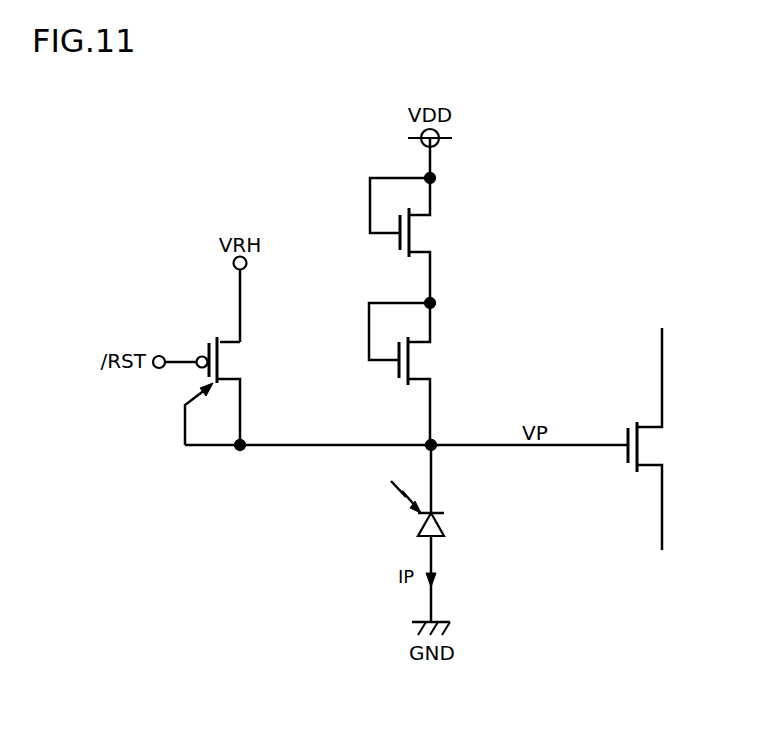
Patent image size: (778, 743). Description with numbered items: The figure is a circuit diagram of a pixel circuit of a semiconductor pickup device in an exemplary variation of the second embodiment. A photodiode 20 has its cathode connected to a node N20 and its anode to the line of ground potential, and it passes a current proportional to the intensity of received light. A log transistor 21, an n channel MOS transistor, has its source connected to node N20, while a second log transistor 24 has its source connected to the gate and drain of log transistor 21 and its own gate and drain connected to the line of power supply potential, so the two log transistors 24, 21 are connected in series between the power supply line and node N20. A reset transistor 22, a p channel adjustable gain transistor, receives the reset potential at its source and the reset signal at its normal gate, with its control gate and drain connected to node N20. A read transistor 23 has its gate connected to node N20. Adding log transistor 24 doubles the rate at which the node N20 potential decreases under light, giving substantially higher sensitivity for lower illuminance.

The photodiode 20 is at (446, 524).
The log transistor 21 is at (420, 382).
The reset transistor 22 is at (231, 340).
The read transistor 23 is at (655, 425).
The log transistor 24 is at (421, 254).
The node N20 is at (436, 452).